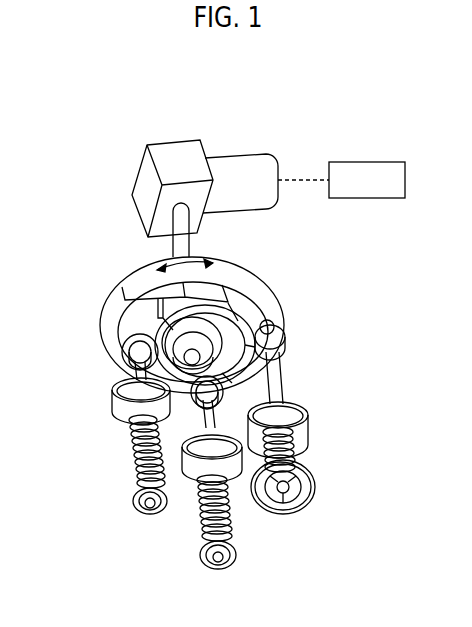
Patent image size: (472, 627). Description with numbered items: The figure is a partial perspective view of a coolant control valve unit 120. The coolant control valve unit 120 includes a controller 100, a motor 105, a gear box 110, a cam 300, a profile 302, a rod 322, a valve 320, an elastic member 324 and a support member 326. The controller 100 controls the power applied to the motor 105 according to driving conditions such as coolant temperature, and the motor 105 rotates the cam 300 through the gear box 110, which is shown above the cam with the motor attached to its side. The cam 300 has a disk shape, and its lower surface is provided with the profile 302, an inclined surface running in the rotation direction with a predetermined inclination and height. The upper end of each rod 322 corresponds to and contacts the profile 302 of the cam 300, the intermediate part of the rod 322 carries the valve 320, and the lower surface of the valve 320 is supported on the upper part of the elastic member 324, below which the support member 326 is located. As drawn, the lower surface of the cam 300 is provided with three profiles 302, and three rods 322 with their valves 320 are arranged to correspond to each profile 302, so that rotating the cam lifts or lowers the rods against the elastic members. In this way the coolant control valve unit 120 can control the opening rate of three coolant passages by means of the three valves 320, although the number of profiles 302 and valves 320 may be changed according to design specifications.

The controller 100 is at (368, 162).
The motor 105 is at (240, 161).
The gear box 110 is at (172, 150).
The coolant control valve unit 120 is at (106, 213).
The cam 300 is at (247, 278).
The profile 302 is at (256, 316).
The valve 320 is at (300, 408).
The rod 322 is at (276, 382).
The elastic member 324 is at (294, 440).
The support member 326 is at (308, 484).